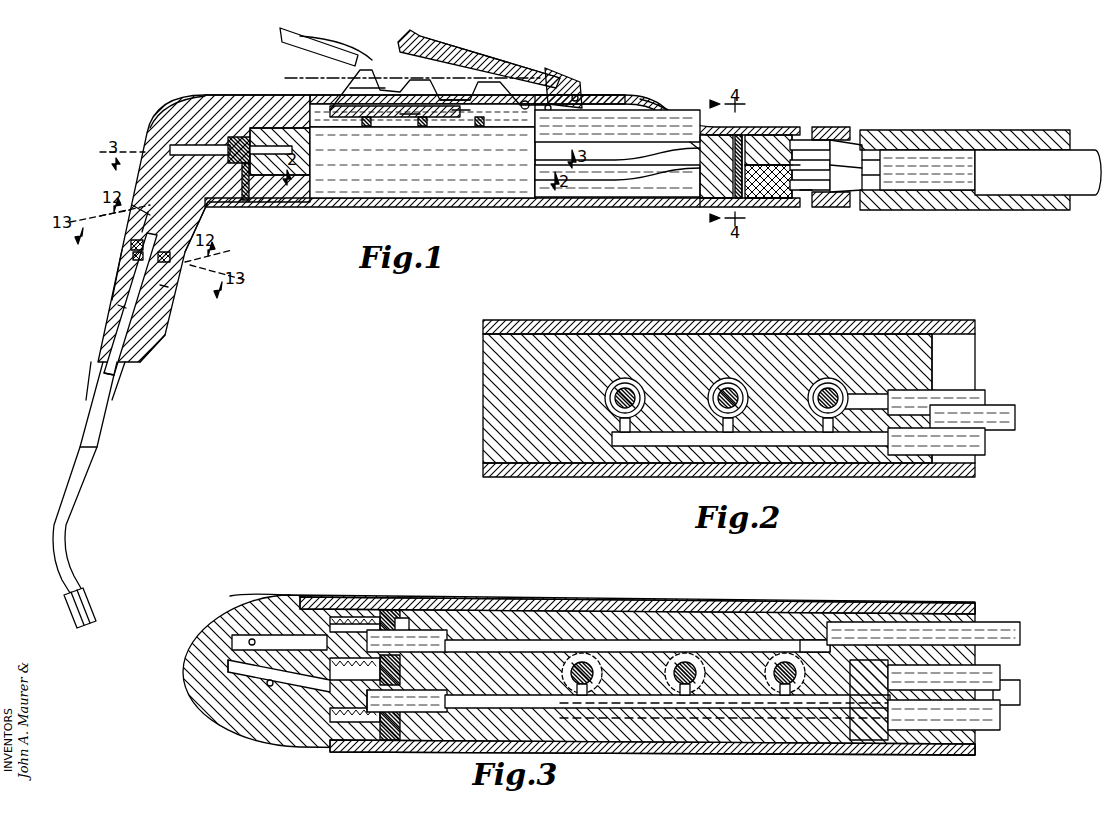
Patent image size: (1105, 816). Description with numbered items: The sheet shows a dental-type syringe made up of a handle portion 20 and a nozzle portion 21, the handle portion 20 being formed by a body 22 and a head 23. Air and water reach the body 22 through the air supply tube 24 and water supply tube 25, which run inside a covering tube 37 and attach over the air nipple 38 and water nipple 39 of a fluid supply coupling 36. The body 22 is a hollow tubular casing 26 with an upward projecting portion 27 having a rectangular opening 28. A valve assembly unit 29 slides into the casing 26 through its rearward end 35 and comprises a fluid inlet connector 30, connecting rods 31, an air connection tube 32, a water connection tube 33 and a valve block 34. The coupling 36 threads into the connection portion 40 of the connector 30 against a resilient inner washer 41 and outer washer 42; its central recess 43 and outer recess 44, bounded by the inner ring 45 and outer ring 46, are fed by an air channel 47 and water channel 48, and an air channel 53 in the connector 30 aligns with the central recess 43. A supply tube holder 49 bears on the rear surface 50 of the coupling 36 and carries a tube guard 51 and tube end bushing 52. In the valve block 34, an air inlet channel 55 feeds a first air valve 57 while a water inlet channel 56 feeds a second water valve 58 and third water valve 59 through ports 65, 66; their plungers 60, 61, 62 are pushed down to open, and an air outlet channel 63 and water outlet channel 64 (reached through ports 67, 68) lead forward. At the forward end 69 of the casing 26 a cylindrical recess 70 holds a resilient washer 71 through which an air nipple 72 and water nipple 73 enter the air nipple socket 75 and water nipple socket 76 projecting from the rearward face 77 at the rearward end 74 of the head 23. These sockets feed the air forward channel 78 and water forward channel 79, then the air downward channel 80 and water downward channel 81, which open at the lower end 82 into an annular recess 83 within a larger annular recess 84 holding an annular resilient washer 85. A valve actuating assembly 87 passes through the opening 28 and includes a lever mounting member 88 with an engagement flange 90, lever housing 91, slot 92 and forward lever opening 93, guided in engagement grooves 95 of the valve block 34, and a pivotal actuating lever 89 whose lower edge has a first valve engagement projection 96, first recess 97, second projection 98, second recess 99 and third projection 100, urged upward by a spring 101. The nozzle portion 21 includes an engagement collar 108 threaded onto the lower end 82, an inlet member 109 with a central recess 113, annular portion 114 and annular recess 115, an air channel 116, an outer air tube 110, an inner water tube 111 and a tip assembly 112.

In FIG. 1, the handle portion 20 is at (201, 92).
In FIG. 1, the nozzle portion 21 is at (106, 444).
In FIG. 1, the body 22 is at (592, 96).
In FIG. 1, the head 23 is at (148, 130).
In FIG. 3, the head 23 is at (182, 687).
In FIG. 1, the air supply tube 24 is at (950, 200).
In FIG. 1, the water supply tube 25 is at (957, 150).
In FIG. 1, the hollow tubular casing 26 is at (594, 208).
In FIG. 2, the hollow tubular casing 26 is at (532, 472).
In FIG. 3, the hollow tubular casing 26 is at (810, 603).
In FIG. 1, the upward projecting portion 27 is at (660, 100).
In FIG. 1, the rectangular opening 28 is at (320, 100).
In FIG. 1, the valve assembly unit 29 is at (500, 180).
In FIG. 1, the fluid inlet connector 30 is at (697, 207).
In FIG. 1, the connecting rods 31 is at (562, 160).
In FIG. 2, the connecting rods 31 is at (1015, 416).
In FIG. 3, the connecting rods 31 is at (1021, 632).
In FIG. 2, the air connection tube 32 is at (985, 395).
In FIG. 3, the air connection tube 32 is at (1000, 677).
In FIG. 1, the water connection tube 33 is at (644, 170).
In FIG. 2, the water connection tube 33 is at (985, 446).
In FIG. 3, the water connection tube 33 is at (1000, 728).
In FIG. 1, the valve block 34 is at (420, 175).
In FIG. 2, the valve block 34 is at (500, 374).
In FIG. 3, the valve block 34 is at (535, 625).
In FIG. 1, the rearward end 35 is at (782, 140).
In FIG. 1, the fluid supply coupling 36 is at (806, 200).
In FIG. 1, the covering tube 37 is at (1072, 162).
In FIG. 1, the air nipple 38 is at (843, 192).
In FIG. 1, the water nipple 39 is at (838, 150).
In FIG. 1, the connection portion 40 is at (748, 206).
In FIG. 1, the inner washer 41 is at (700, 140).
In FIG. 1, the outer washer 42 is at (725, 157).
In FIG. 1, the central recess 43 is at (770, 206).
In FIG. 1, the outer recess 44 is at (710, 206).
In FIG. 1, the inner ring 45 is at (755, 206).
In FIG. 1, the outer ring 46 is at (746, 150).
In FIG. 1, the air channel 47 is at (786, 206).
In FIG. 1, the water channel 48 is at (756, 160).
In FIG. 1, the supply tube holder 49 is at (822, 135).
In FIG. 1, the rear surface 50 is at (790, 182).
In FIG. 1, the tube guard 51 is at (905, 210).
In FIG. 1, the tube end bushing 52 is at (878, 136).
In FIG. 1, the air channel 53 is at (690, 182).
In FIG. 2, the air inlet channel 55 is at (864, 400).
In FIG. 3, the air inlet channel 55 is at (805, 648).
In FIG. 2, the water inlet channel 56 is at (865, 446).
In FIG. 3, the water inlet channel 56 is at (808, 746).
In FIG. 2, the first air valve 57 is at (827, 379).
In FIG. 3, the first air valve 57 is at (786, 700).
In FIG. 2, the second water valve 58 is at (726, 379).
In FIG. 3, the second water valve 58 is at (682, 690).
In FIG. 2, the third water valve 59 is at (619, 379).
In FIG. 3, the third water valve 59 is at (582, 660).
In FIG. 1, the plunger 60 is at (481, 128).
In FIG. 2, the plunger 60 is at (830, 420).
In FIG. 3, the plunger 60 is at (782, 660).
In FIG. 1, the plunger 61 is at (424, 128).
In FIG. 2, the plunger 61 is at (736, 390).
In FIG. 3, the plunger 61 is at (688, 660).
In FIG. 1, the plunger 62 is at (366, 128).
In FIG. 2, the plunger 62 is at (631, 390).
In FIG. 3, the plunger 62 is at (594, 668).
In FIG. 3, the air outlet channel 63 is at (470, 645).
In FIG. 3, the water outlet channel 64 is at (455, 702).
In FIG. 2, the port 65 is at (734, 447).
In FIG. 2, the port 66 is at (626, 447).
In FIG. 3, the port 67 is at (690, 708).
In FIG. 3, the port 68 is at (586, 708).
In FIG. 3, the forward end 69 is at (398, 625).
In FIG. 3, the cylindrical recess 70 is at (382, 616).
In FIG. 1, the resilient washer 71 is at (252, 190).
In FIG. 3, the resilient washer 71 is at (388, 742).
In FIG. 3, the air nipple 72 is at (430, 632).
In FIG. 1, the water nipple 73 is at (298, 158).
In FIG. 3, the water nipple 73 is at (425, 707).
In FIG. 3, the rearward end 74 is at (300, 598).
In FIG. 3, the air nipple socket 75 is at (340, 620).
In FIG. 1, the water nipple socket 76 is at (236, 147).
In FIG. 3, the water nipple socket 76 is at (340, 735).
In FIG. 3, the rearward face 77 is at (380, 728).
In FIG. 3, the air forward channel 78 is at (268, 638).
In FIG. 1, the water forward channel 79 is at (197, 132).
In FIG. 3, the water forward channel 79 is at (260, 690).
In FIG. 3, the air downward channel 80 is at (248, 638).
In FIG. 1, the water downward channel 81 is at (192, 160).
In FIG. 3, the water downward channel 81 is at (228, 668).
In FIG. 1, the lower end 82 is at (140, 205).
In FIG. 1, the annular recess 83 is at (195, 221).
In FIG. 1, the larger annular recess 84 is at (128, 240).
In FIG. 1, the annular resilient washer 85 is at (150, 212).
In FIG. 1, the valve actuating assembly 87 is at (503, 60).
In FIG. 1, the lever mounting member 88 is at (420, 40).
In FIG. 1, the actuating lever 89 is at (283, 33).
In FIG. 1, the engagement flange 90 is at (287, 100).
In FIG. 1, the lever housing 91 is at (524, 72).
In FIG. 1, the slot 92 is at (343, 103).
In FIG. 1, the forward lever opening 93 is at (385, 62).
In FIG. 1, the engagement grooves 95 is at (347, 133).
In FIG. 1, the first valve engagement projection 96 is at (458, 112).
In FIG. 1, the first downwardly opening recess 97 is at (440, 110).
In FIG. 1, the second valve engagement projection 98 is at (412, 112).
In FIG. 1, the second downwardly opening recess 99 is at (397, 115).
In FIG. 1, the third valve engagement projection 100 is at (380, 78).
In FIG. 1, the spring 101 is at (549, 100).
In FIG. 1, the engagement collar 108 is at (117, 278).
In FIG. 1, the inlet member 109 is at (143, 347).
In FIG. 1, the outer air tube 110 is at (97, 395).
In FIG. 1, the inner water tube 111 is at (82, 444).
In FIG. 1, the tip assembly 112 is at (72, 610).
In FIG. 1, the central recess 113 is at (162, 288).
In FIG. 1, the annular portion 114 is at (125, 260).
In FIG. 1, the annular recess 115 is at (170, 262).
In FIG. 1, the air channel 116 is at (118, 314).